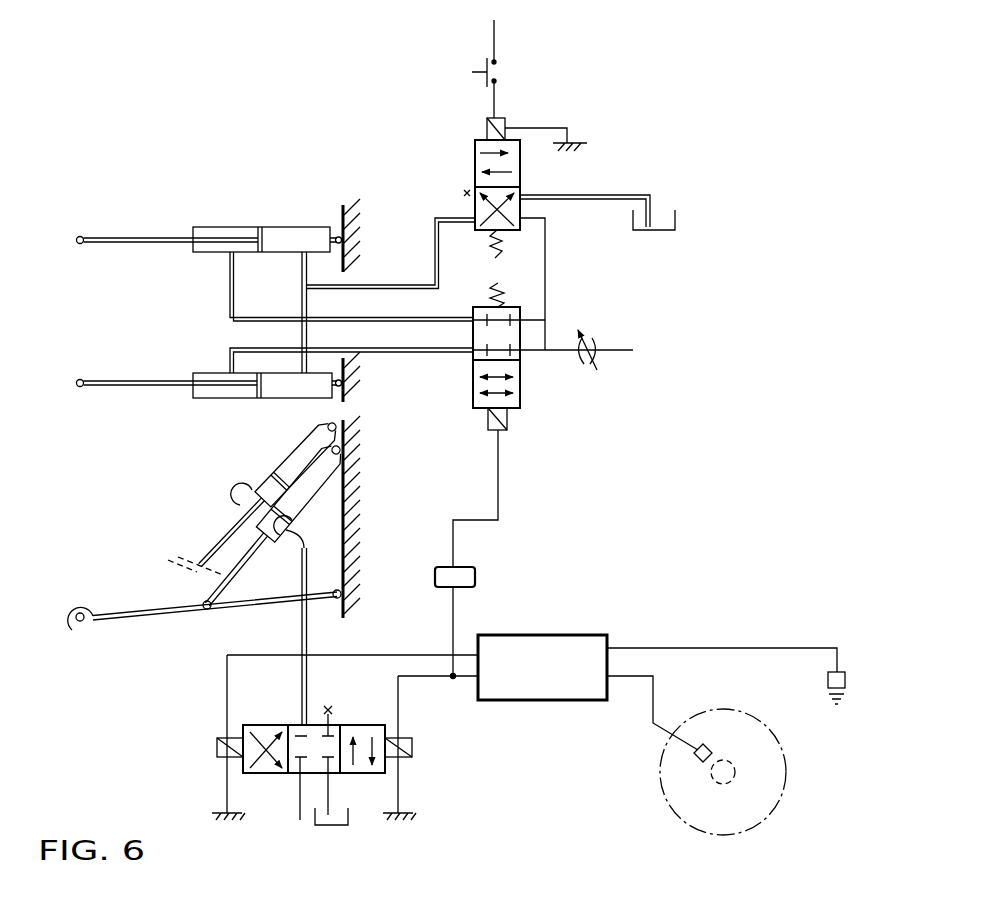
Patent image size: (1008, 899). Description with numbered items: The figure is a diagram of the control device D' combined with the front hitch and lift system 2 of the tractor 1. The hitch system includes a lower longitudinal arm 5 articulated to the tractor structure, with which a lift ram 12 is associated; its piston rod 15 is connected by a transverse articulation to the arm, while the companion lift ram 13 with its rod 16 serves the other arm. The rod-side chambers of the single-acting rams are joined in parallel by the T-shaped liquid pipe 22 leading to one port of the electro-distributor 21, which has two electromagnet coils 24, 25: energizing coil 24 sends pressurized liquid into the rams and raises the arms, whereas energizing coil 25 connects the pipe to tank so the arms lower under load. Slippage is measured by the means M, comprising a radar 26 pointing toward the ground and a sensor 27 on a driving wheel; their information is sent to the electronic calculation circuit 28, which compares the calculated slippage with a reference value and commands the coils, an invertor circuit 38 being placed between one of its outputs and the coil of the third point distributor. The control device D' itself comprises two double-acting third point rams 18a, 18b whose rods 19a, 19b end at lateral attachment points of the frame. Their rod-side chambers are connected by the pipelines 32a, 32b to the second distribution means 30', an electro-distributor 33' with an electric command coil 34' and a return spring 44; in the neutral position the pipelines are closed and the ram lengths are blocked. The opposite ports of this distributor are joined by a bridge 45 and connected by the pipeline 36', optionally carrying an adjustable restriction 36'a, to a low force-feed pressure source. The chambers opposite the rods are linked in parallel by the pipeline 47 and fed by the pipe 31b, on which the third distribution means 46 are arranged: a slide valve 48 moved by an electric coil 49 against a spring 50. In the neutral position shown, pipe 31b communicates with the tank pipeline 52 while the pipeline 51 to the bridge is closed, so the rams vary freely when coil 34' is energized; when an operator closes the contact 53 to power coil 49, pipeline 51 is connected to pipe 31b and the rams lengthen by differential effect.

The tractor 1 is at (366, 212).
The hitch and lift system 2 is at (148, 634).
The lower longitudinal arm 5 is at (148, 608).
The lift ram 12 is at (312, 490).
The lift ram 13 is at (291, 458).
The piston rod 15 is at (241, 567).
The piston rod 16 is at (228, 540).
The third point ram 18a is at (238, 400).
The third point ram 18b is at (240, 226).
The rod 19a is at (112, 388).
The rod 19b is at (110, 236).
The electro-distributor 21 is at (355, 720).
The liquid pipe 22 is at (301, 624).
The electromagnet coil 24 is at (412, 750).
The electromagnet coil 25 is at (215, 745).
The radar 26 is at (842, 670).
The sensor 27 is at (694, 757).
The electronic calculation circuit 28 is at (565, 634).
The second distribution means 30' is at (536, 373).
The pipe 31b is at (415, 261).
The pipeline 32a is at (230, 343).
The pipeline 32b is at (229, 288).
The electro-distributor 33' is at (434, 389).
The electric command coil 34' is at (506, 487).
The pipeline 36' is at (593, 378).
The adjustable restriction 36'a is at (627, 336).
The invertor circuit 38 is at (478, 578).
The return spring 44 is at (505, 292).
The bridge 45 is at (553, 347).
The third distribution means 46 is at (527, 172).
The pipeline 47 is at (301, 305).
The slide valve 48 is at (474, 162).
The electric coil 49 is at (508, 118).
The spring 50 is at (492, 250).
The pipeline 51 is at (546, 245).
The pipeline 52 is at (625, 196).
The contact 53 is at (483, 62).
The control device D' is at (261, 149).
The means for measuring slippage M is at (812, 690).